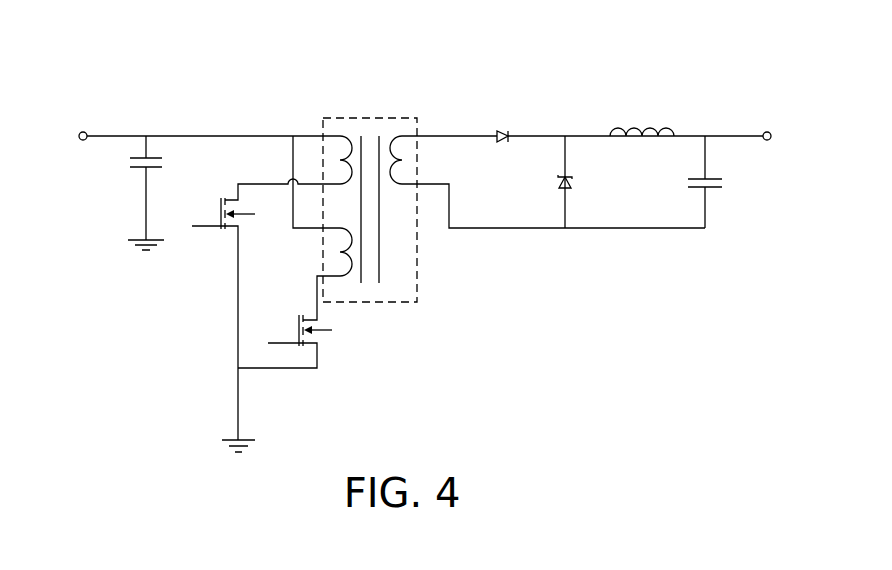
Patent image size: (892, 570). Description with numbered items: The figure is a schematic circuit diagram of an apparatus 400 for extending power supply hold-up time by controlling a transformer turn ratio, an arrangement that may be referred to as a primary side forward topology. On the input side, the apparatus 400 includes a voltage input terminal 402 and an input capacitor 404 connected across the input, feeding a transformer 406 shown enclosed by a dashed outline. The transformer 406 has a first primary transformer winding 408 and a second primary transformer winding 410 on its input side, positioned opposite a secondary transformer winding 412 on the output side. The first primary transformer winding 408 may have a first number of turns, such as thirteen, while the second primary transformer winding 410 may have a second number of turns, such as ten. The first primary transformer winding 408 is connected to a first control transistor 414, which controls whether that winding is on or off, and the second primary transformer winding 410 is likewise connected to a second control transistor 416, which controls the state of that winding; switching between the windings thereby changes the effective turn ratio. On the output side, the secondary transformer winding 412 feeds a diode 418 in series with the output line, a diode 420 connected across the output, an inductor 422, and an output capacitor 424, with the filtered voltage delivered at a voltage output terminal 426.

The apparatus 400 is at (88, 41).
The voltage input terminal 402 is at (80, 141).
The input capacitor 404 is at (128, 168).
The transformer 406 is at (417, 302).
The first primary transformer winding 408 is at (340, 135).
The second primary transformer winding 410 is at (342, 277).
The secondary transformer winding 412 is at (402, 135).
The first control transistor 414 is at (222, 228).
The second control transistor 416 is at (320, 332).
The diode 418 is at (498, 132).
The diode 420 is at (570, 185).
The inductor 422 is at (637, 126).
The output capacitor 424 is at (721, 188).
The voltage output terminal 426 is at (770, 141).